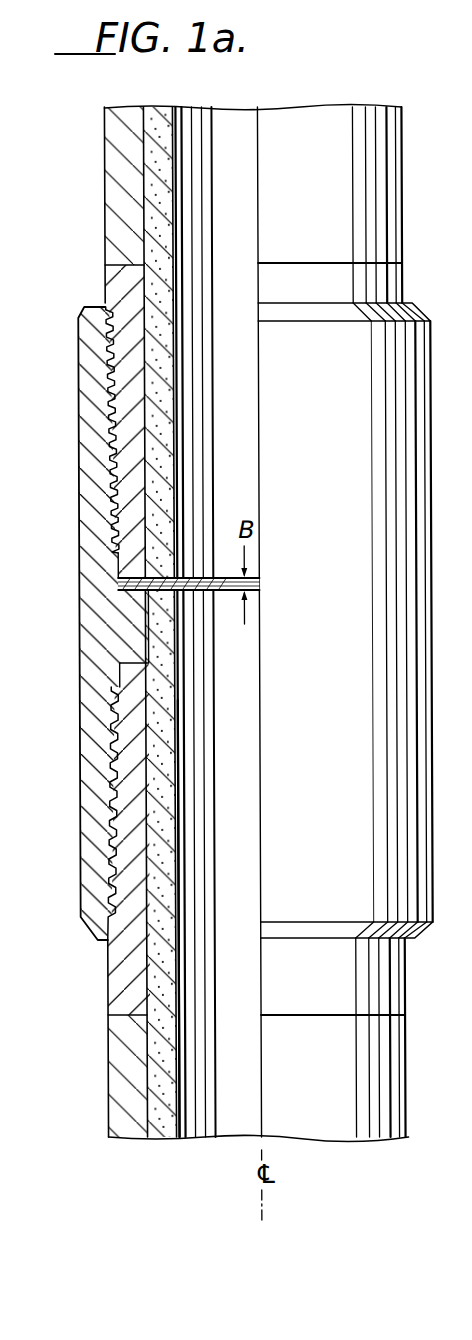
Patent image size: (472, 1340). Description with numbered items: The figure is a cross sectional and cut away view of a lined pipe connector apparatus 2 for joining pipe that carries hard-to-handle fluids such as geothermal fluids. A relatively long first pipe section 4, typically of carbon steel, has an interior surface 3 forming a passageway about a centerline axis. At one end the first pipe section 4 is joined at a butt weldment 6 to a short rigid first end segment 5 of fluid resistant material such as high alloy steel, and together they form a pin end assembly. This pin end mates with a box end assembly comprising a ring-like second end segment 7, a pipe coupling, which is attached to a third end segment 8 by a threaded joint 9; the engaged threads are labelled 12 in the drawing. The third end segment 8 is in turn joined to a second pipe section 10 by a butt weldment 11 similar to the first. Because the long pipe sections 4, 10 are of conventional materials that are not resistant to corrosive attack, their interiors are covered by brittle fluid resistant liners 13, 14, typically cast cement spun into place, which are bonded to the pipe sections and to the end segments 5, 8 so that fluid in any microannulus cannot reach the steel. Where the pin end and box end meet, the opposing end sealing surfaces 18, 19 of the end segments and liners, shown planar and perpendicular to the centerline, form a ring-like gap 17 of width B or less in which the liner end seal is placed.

The lined pipe connector apparatus 2 is at (424, 262).
The interior surface 3 is at (143, 213).
The first pipe section 4 is at (104, 167).
The first end segment 5 is at (104, 290).
The butt weldment 6 is at (104, 265).
The second end segment 7 is at (77, 358).
The third end segment 8 is at (104, 975).
The threaded joint 9 is at (108, 823).
The second pipe section 10 is at (104, 1073).
The butt weldment 11 is at (104, 1015).
The upper thread 12 is at (108, 432).
The first liner 13 is at (173, 421).
The second liner 14 is at (173, 889).
The gap 17 is at (122, 585).
The end sealing surface 18 is at (118, 577).
The end sealing surface 19 is at (122, 591).